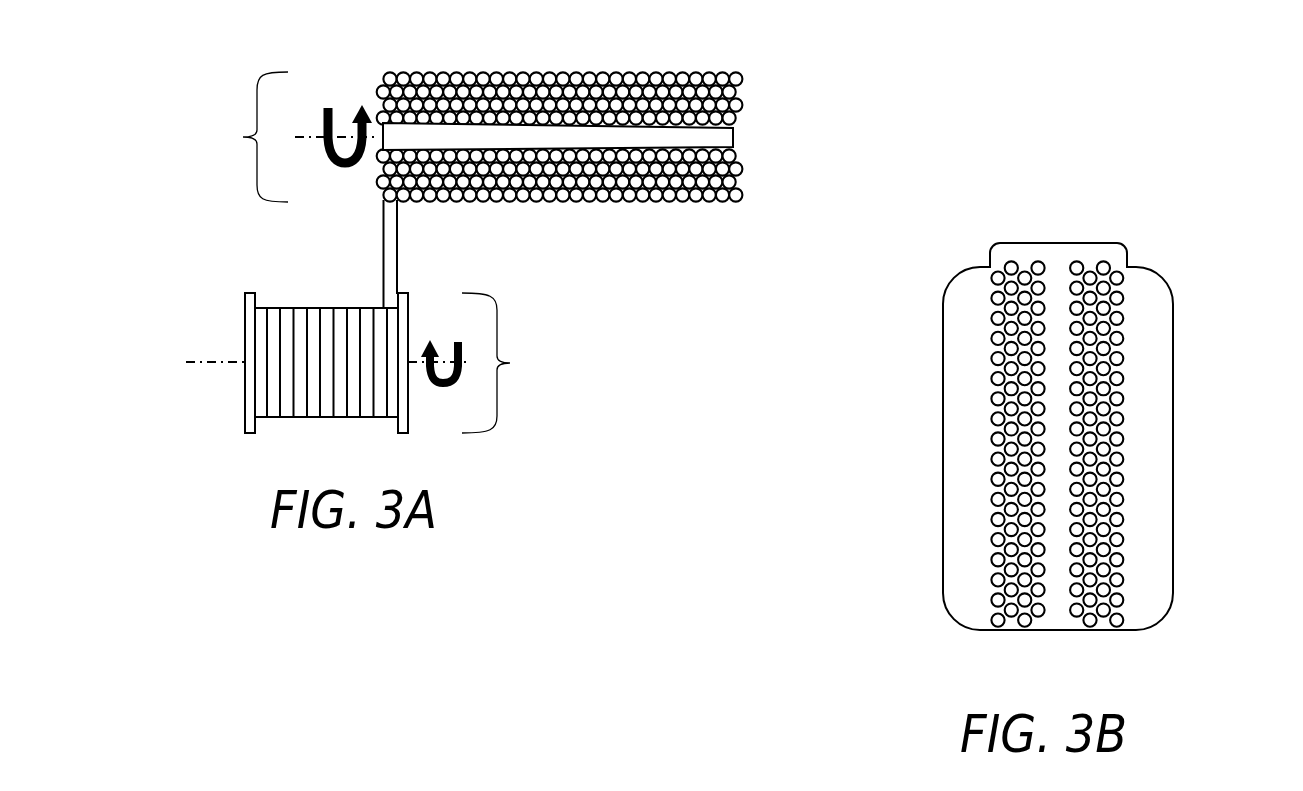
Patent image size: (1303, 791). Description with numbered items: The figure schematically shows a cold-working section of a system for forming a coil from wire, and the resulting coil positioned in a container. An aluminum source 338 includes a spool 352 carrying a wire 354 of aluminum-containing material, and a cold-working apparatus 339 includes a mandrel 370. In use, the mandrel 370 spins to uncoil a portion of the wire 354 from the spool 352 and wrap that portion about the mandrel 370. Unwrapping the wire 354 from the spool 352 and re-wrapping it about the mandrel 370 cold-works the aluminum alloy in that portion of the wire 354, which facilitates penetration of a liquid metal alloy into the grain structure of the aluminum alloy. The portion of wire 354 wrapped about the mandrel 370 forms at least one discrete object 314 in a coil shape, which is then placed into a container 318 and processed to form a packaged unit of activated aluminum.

In FIG. 3A, the cold-working apparatus 339 is at (243, 137).
In FIG. 3A, the mandrel 370 is at (732, 132).
In FIG. 3A, the wire 354 is at (388, 250).
In FIG. 3A, the spool 352 is at (236, 324).
In FIG. 3A, the aluminum source 338 is at (510, 363).
In FIG. 3B, the container 318 is at (1160, 262).
In FIG. 3B, the discrete object 314 is at (1130, 410).